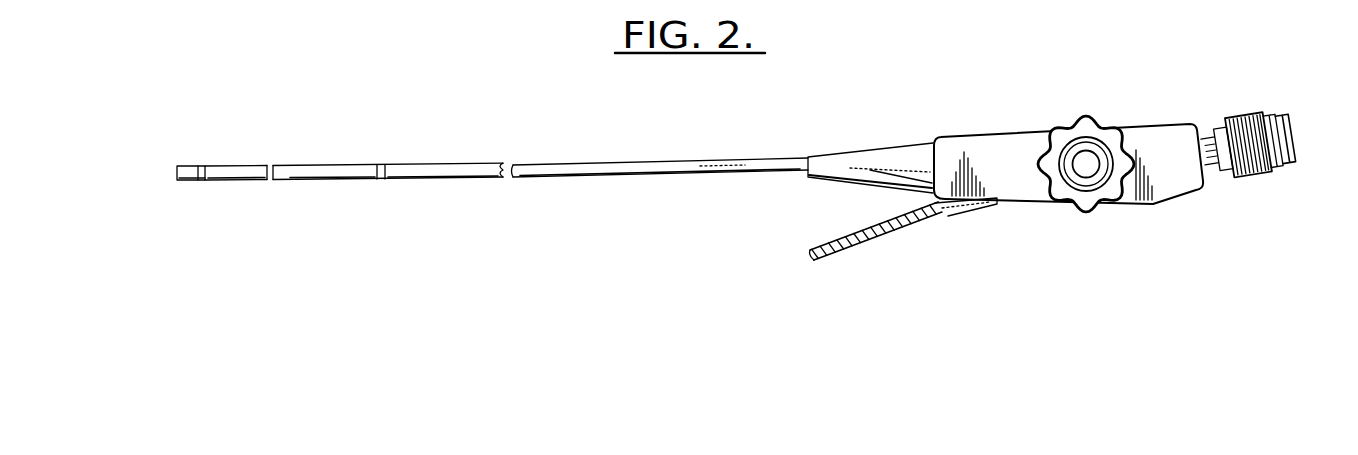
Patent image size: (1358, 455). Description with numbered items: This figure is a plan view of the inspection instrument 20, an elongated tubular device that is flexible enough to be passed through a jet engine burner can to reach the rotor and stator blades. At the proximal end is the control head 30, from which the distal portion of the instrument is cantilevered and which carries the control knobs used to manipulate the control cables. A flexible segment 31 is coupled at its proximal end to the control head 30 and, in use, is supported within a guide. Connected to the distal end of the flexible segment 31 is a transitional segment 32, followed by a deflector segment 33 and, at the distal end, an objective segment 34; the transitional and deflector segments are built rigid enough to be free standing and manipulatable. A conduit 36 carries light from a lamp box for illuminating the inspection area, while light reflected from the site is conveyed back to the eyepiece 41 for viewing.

The inspection instrument 20 is at (699, 150).
The control head 30 is at (1005, 136).
The flexible segment 31 is at (578, 179).
The transitional segment 32 is at (350, 165).
The deflector segment 33 is at (255, 181).
The objective segment 34 is at (187, 165).
The conduit 36 is at (913, 227).
The eyepiece 41 is at (1278, 101).